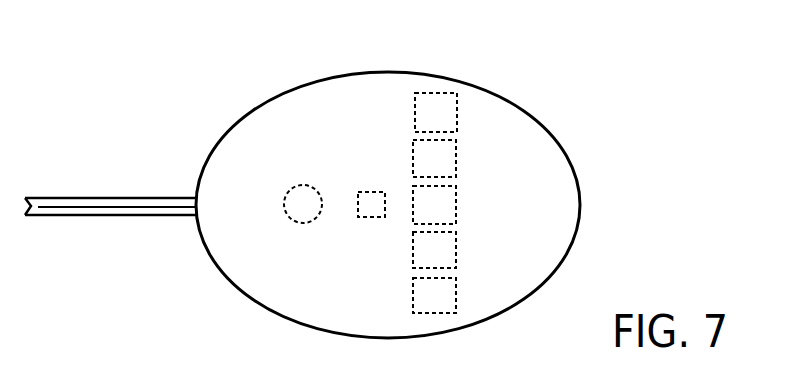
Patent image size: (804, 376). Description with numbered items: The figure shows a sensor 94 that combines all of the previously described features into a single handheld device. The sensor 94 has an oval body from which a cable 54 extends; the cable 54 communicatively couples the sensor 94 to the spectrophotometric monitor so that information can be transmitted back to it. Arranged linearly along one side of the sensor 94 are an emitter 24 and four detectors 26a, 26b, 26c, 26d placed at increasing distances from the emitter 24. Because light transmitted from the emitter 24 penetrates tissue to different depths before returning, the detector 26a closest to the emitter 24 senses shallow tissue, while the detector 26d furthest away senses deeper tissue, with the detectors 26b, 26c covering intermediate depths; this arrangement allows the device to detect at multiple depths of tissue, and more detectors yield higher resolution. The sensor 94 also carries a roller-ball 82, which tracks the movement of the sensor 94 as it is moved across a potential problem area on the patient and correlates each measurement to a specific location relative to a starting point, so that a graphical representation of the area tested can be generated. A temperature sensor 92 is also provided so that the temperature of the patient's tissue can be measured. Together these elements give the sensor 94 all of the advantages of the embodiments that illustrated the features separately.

The sensor 94 is at (268, 56).
The cable 54 is at (112, 198).
The roller-ball 82 is at (300, 186).
The temperature sensor 92 is at (375, 192).
The emitter 24 is at (416, 113).
The detector 26a is at (457, 160).
The detector 26b is at (457, 208).
The detector 26c is at (413, 251).
The detector 26d is at (413, 296).